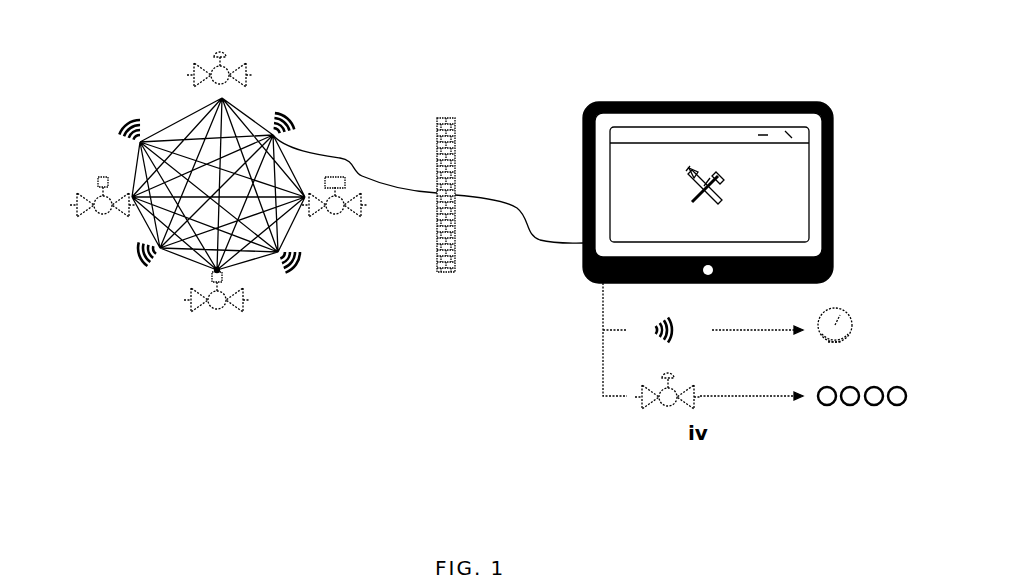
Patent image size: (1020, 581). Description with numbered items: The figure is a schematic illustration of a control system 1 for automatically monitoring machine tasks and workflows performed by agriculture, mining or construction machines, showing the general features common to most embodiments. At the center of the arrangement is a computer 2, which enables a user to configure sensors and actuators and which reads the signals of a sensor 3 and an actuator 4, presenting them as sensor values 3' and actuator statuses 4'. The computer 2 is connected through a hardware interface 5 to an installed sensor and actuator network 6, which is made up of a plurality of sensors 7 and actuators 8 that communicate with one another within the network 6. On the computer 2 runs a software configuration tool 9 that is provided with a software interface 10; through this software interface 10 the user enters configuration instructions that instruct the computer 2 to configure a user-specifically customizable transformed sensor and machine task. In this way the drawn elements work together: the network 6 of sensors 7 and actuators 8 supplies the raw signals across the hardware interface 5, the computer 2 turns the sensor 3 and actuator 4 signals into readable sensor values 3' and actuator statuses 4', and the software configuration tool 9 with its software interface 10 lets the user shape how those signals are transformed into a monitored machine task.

The control system 1 is at (434, 56).
The computer 2 is at (727, 145).
The sensor 3 is at (615, 323).
The sensor values 3' is at (861, 310).
The actuator 4 is at (385, 232).
The actuator statuses 4' is at (879, 390).
The hardware interface 5 is at (446, 118).
The sensor and actuator network 6 is at (364, 232).
The sensors 7 is at (160, 250).
The actuators 8 is at (218, 271).
The software configuration tool 9 is at (620, 127).
The software interface 10 is at (665, 177).